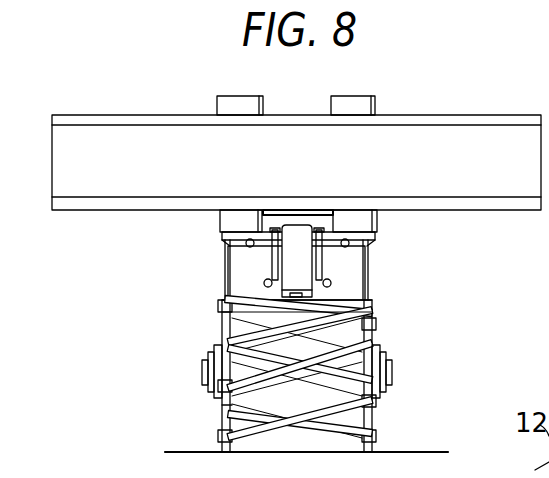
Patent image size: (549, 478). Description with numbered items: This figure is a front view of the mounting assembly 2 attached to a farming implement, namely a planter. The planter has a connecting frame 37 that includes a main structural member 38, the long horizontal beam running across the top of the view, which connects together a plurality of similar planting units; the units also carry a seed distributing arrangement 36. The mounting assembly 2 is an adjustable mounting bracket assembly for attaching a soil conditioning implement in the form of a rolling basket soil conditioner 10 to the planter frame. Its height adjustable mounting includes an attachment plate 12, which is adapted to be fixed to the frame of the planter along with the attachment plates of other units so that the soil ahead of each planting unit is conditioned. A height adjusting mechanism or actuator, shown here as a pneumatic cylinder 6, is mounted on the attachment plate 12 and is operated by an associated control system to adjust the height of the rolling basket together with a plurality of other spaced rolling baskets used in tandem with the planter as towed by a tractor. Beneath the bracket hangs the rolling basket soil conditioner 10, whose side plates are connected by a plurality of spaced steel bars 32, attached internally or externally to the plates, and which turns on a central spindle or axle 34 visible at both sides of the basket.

The main structural member 38 is at (53, 152).
The connecting frame 37 is at (357, 84).
The attachment plate 12 is at (357, 264).
The pneumatic cylinder 6 is at (297, 258).
The mounting assembly 2 is at (196, 286).
The rolling basket soil conditioner 10 is at (388, 314).
The central spindle or axle 34 is at (378, 348).
The spaced steel bars 32 is at (223, 312).
The seed distributing arrangement 36 is at (222, 405).